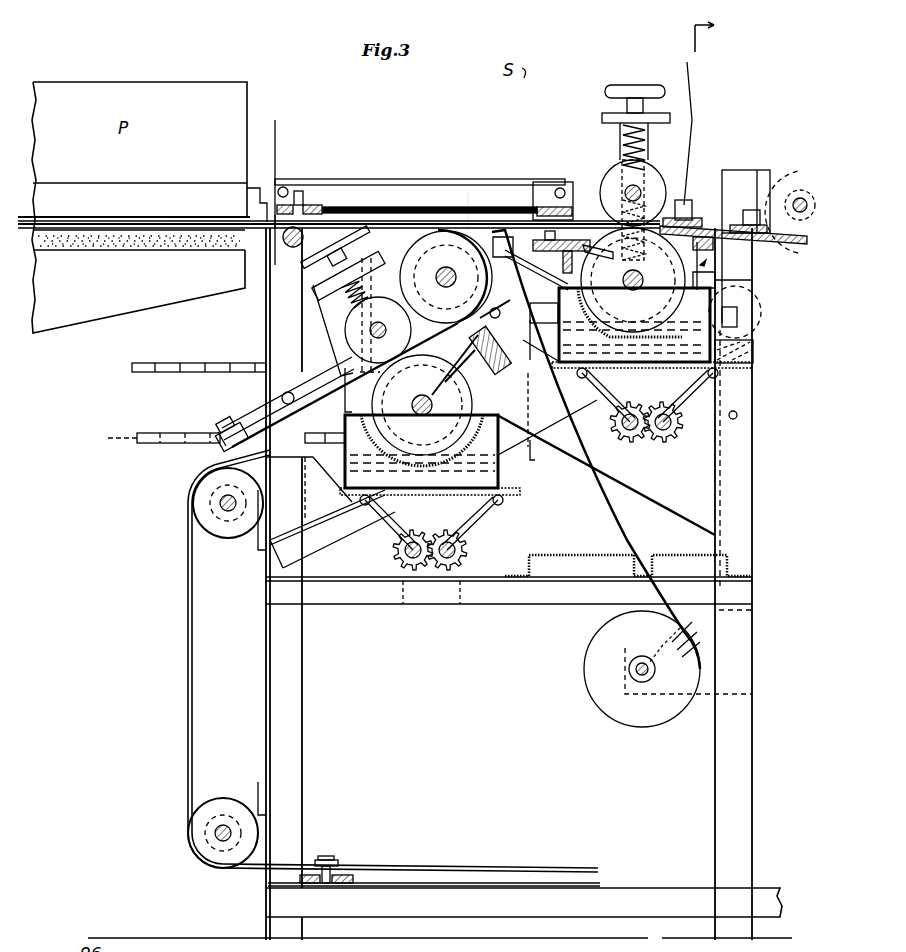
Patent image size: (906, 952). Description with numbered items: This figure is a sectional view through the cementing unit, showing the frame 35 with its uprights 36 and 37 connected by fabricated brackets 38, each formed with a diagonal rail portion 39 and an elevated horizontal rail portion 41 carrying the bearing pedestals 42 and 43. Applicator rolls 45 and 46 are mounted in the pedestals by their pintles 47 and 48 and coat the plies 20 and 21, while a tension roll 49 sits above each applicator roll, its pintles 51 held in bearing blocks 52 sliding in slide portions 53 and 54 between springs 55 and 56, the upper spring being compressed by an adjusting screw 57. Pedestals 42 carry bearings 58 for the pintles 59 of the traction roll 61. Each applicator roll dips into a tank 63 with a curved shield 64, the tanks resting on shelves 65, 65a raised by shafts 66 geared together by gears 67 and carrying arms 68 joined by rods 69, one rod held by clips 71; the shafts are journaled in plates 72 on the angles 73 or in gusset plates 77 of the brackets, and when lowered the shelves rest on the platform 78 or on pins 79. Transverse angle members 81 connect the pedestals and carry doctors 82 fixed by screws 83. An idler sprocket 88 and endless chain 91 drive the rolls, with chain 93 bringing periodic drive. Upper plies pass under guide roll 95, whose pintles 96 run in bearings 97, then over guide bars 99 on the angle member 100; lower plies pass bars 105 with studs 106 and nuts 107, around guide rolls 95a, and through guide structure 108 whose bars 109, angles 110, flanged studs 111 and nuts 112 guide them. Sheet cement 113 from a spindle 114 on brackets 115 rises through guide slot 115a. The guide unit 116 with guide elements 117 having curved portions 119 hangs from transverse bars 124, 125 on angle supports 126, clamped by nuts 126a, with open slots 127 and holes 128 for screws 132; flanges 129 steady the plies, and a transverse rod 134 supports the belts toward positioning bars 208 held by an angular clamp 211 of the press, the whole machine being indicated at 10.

The machine 10 is at (712, 148).
The plies 20 is at (186, 658).
The plies 21 is at (712, 230).
The frame 35 is at (306, 776).
The uprights 36 is at (291, 748).
The uprights 37 is at (740, 774).
The fabricated brackets 38 is at (532, 442).
The diagonal rail portion 39 is at (300, 549).
The elevated horizontal rail portion 41 is at (740, 346).
The bearing pedestals 42 is at (332, 292).
The bearing pedestals 43 is at (677, 125).
The applicator roll 45 is at (438, 432).
The applicator roll 46 is at (647, 302).
The pintle 47 is at (422, 383).
The pintle 48 is at (642, 276).
The tension roll 49 is at (348, 327).
The pintles 51 is at (378, 330).
The bearing blocks 52 is at (610, 167).
The slide portion 53 is at (333, 292).
The slide portion 54 is at (650, 133).
The spring 55 is at (622, 148).
The spring 56 is at (672, 205).
The adjusting screw 57 is at (627, 103).
The bearings 58 is at (468, 203).
The pintles 59 is at (445, 286).
The traction roll 61 is at (444, 243).
The tank 63 is at (500, 484).
The curved shield 64 is at (436, 468).
The shelf 65 is at (520, 494).
The shelf 65a is at (750, 366).
The shafts 66 is at (445, 524).
The gears 67 is at (456, 550).
The arms 68 is at (398, 532).
The rods 69 is at (362, 505).
The clips 71 is at (583, 374).
The plates 72 is at (424, 568).
The angles 73 is at (388, 601).
The gusset plates 77 is at (684, 482).
The platform 78 is at (575, 552).
The pins 79 is at (737, 415).
The transverse angle members 81 is at (590, 256).
The scraper plates or doctors 82 is at (503, 236).
The screws 83 is at (492, 352).
The idler sprocket 88 is at (758, 294).
The endless chain 91 is at (544, 278).
The chain 93 is at (148, 364).
The guide roll 95 is at (799, 197).
The guide rolls 95a is at (212, 517).
The pintles 96 is at (799, 198).
The bearings 97 is at (788, 234).
The transverse bars 99 is at (730, 244).
The transverse angle member 100 is at (739, 278).
The transverse bars 105 is at (342, 879).
The studs 106 is at (324, 860).
The clamping nuts 107 is at (308, 864).
The guide structure 108 is at (267, 398).
The bars 109 is at (217, 464).
The angles 110 is at (268, 410).
The flanged studs 111 is at (234, 422).
The nuts 112 is at (226, 431).
The strip of sheet cement 113 is at (612, 518).
The spindle 114 is at (652, 665).
The brackets 115 is at (664, 636).
The guide slot 115a is at (650, 556).
The guide unit 116 is at (335, 150).
The guide elements 117 is at (352, 208).
The depending curved portion 119 is at (502, 242).
The transverse bars 124 is at (308, 190).
The transverse bars 125 is at (275, 120).
The angle supports 126 is at (360, 206).
The nuts 126a is at (552, 190).
The open slots 127 is at (283, 187).
The holes 128 is at (567, 208).
The depending flanges 129 is at (275, 245).
The screws 132 is at (560, 170).
The transverse rod 134 is at (293, 247).
The positioning bars 208 is at (190, 203).
The angular clamp 211 is at (236, 188).